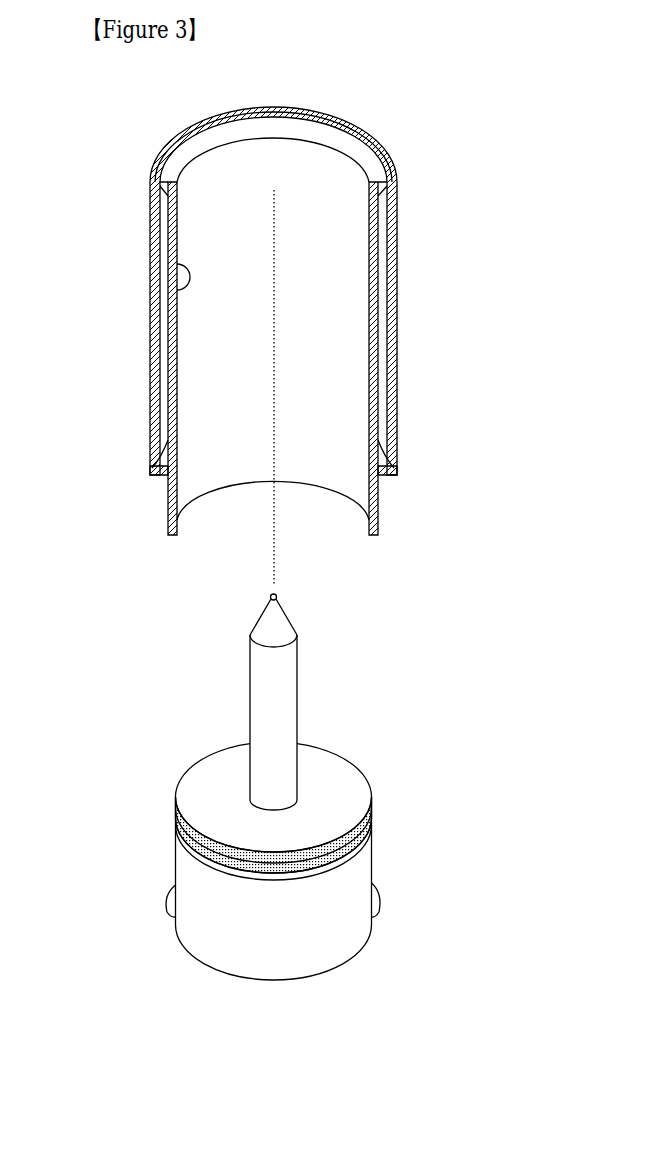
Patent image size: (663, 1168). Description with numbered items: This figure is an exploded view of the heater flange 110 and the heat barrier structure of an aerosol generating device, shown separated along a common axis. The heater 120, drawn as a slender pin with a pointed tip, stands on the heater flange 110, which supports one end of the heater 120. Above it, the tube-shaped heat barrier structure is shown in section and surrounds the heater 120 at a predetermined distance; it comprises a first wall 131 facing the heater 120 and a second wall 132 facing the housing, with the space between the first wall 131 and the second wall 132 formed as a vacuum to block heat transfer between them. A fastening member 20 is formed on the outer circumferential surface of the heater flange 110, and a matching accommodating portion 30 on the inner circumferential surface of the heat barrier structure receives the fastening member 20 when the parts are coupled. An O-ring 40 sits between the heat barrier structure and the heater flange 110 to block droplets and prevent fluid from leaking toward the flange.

The accommodating portion 30 is at (262, 321).
The second wall 132 is at (155, 240).
The first wall 131 is at (176, 292).
The heater 120 is at (283, 676).
The O-ring 40 is at (340, 868).
The fastening member 20 is at (381, 906).
The heater flange 110 is at (320, 947).